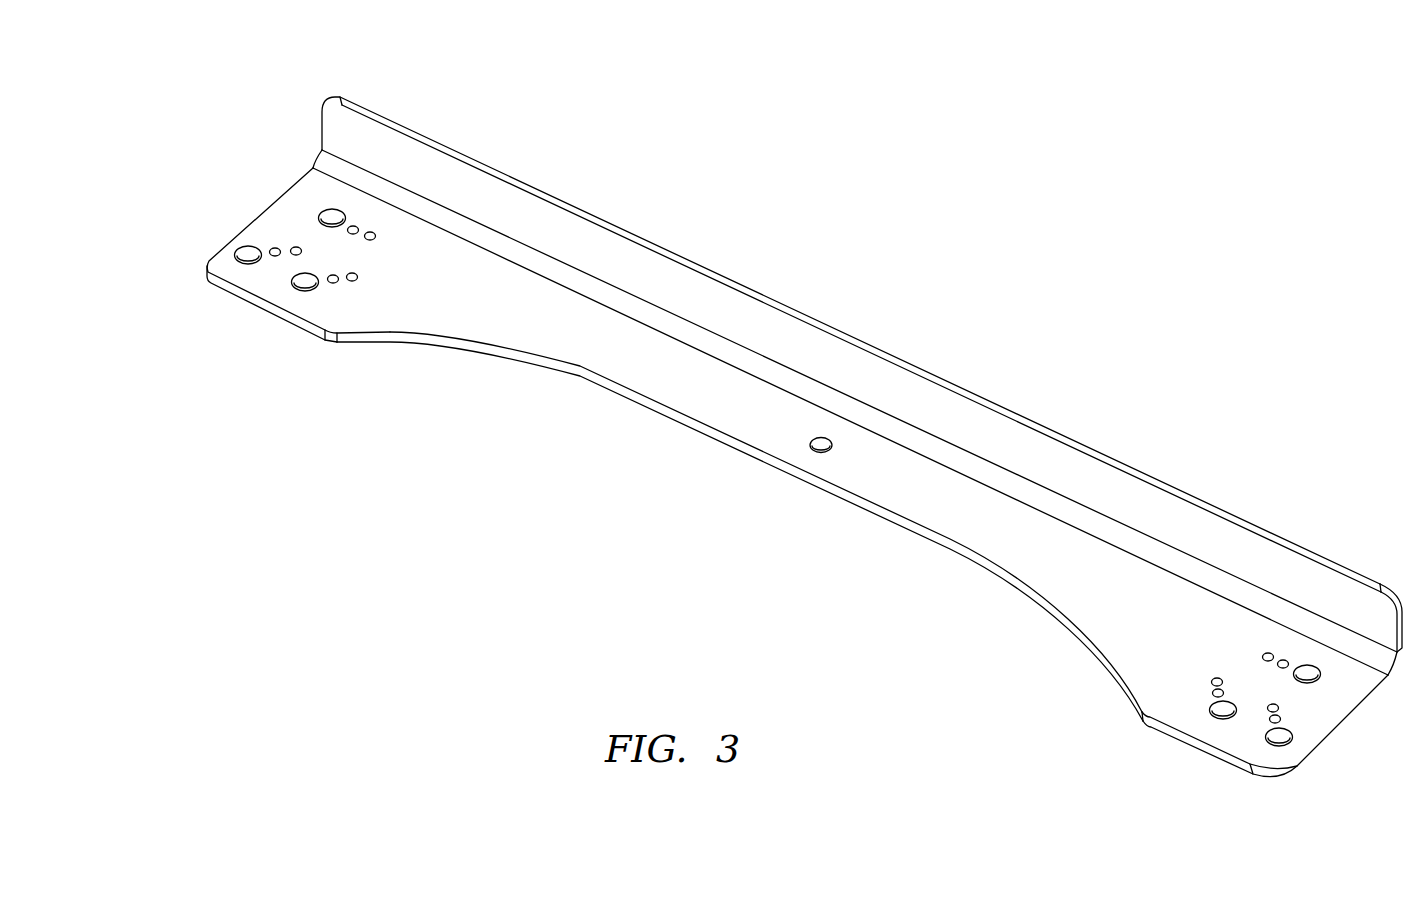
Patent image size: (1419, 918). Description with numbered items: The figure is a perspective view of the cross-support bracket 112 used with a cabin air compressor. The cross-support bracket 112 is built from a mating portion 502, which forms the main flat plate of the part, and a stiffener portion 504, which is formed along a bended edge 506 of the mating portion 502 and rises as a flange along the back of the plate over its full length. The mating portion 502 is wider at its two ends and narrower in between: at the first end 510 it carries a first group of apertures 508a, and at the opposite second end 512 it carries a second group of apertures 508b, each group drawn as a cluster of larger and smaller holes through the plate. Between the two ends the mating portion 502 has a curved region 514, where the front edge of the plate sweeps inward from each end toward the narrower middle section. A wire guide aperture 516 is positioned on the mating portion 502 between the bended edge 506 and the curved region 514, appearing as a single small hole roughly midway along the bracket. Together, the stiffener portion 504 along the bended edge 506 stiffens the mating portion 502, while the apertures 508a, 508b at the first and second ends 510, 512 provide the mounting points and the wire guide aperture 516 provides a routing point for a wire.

The cross-support bracket 112 is at (789, 441).
The mating portion 502 is at (493, 315).
The stiffener portion 504 is at (1062, 447).
The bended edge 506 is at (312, 150).
The first group of apertures 508a is at (381, 212).
The second group of apertures 508b is at (1290, 634).
The first end 510 is at (267, 306).
The second end 512 is at (1177, 733).
The curved region 514 is at (676, 413).
The wire guide aperture 516 is at (821, 453).